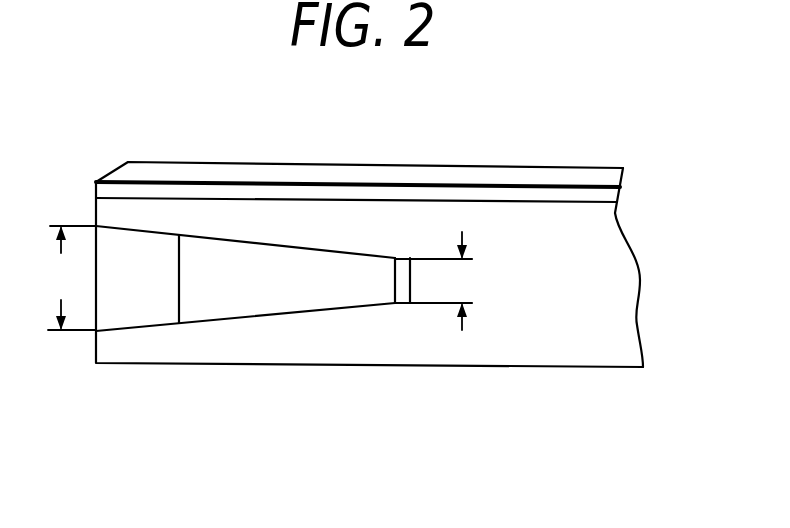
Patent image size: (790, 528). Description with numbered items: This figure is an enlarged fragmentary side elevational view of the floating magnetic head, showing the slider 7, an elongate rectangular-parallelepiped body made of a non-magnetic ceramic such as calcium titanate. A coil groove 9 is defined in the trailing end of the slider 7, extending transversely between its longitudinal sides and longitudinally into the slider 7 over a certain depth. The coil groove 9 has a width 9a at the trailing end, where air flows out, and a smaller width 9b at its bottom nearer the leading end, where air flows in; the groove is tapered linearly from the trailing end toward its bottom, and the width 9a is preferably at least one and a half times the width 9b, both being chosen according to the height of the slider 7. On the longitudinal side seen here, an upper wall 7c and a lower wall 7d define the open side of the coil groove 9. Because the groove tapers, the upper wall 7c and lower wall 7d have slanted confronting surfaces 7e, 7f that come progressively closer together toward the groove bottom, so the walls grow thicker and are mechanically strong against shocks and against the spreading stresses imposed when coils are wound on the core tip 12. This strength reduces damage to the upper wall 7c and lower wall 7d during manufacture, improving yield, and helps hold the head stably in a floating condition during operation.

The slider 7 is at (551, 220).
The upper wall 7c is at (305, 220).
The lower wall 7d is at (338, 335).
The slanted confronting surface 7e is at (314, 250).
The slanted confronting surface 7f is at (335, 310).
The coil groove 9 is at (284, 313).
The width 9a is at (72, 278).
The width 9b is at (461, 281).
The core tip 12 is at (130, 303).